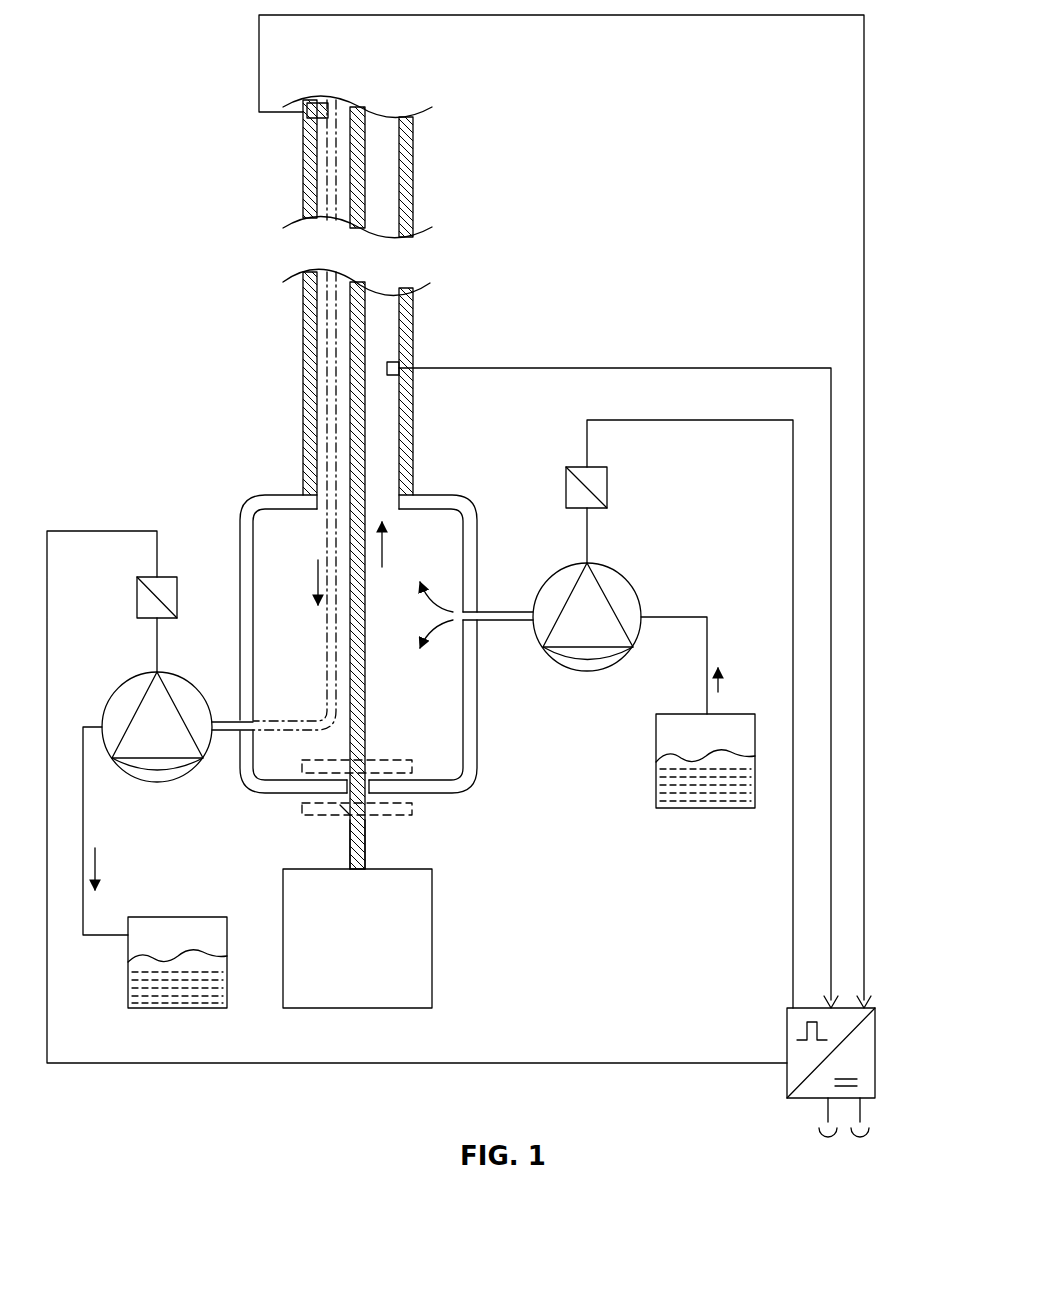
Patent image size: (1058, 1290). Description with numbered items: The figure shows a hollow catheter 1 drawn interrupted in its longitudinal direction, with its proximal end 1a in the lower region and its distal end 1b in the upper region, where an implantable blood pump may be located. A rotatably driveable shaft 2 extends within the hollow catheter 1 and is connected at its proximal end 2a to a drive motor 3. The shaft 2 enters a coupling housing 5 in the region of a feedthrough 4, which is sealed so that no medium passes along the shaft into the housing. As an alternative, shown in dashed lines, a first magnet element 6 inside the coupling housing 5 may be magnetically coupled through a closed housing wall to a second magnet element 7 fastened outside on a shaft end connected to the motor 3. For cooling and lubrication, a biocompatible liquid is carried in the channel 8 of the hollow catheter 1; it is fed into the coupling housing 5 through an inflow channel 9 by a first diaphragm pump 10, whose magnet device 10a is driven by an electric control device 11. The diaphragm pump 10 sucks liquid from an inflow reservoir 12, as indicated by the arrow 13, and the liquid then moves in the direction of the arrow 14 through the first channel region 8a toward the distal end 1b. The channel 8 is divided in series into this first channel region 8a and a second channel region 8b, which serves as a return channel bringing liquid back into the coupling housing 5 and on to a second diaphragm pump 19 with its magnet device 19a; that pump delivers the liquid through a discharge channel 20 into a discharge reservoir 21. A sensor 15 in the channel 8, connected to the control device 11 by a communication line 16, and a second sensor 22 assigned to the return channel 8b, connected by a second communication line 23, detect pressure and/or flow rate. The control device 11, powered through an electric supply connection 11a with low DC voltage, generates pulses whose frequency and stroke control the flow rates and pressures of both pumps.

The hollow catheter 1 is at (413, 312).
The proximal end 1a is at (303, 388).
The distal end 1b is at (413, 162).
The shaft 2 is at (361, 290).
The proximal end of the shaft 2a is at (368, 856).
The drive motor 3 is at (432, 926).
The feedthrough 4 is at (324, 817).
The coupling housing 5 is at (477, 732).
The first magnet element 6 is at (385, 757).
The second magnet element 7 is at (412, 812).
The channel 8 is at (390, 300).
The first channel region 8a is at (388, 445).
The second channel region 8b is at (325, 553).
The inflow channel 9 is at (471, 612).
The diaphragm pump 10 is at (638, 585).
The magnet device 10a is at (607, 487).
The control device 11 is at (875, 1050).
The electric supply connection 11a is at (868, 1132).
The inflow reservoir 12 is at (656, 738).
The arrow 13 is at (735, 672).
The arrow 14 is at (398, 540).
The sensor 15 is at (393, 377).
The communication line 16 is at (688, 368).
The second diaphragm pump 19 is at (106, 680).
The magnet device 19a is at (137, 600).
The discharge channel 20 is at (88, 832).
The discharge reservoir 21 is at (172, 1010).
The second sensor 22 is at (320, 120).
The second communication line 23 is at (552, 17).